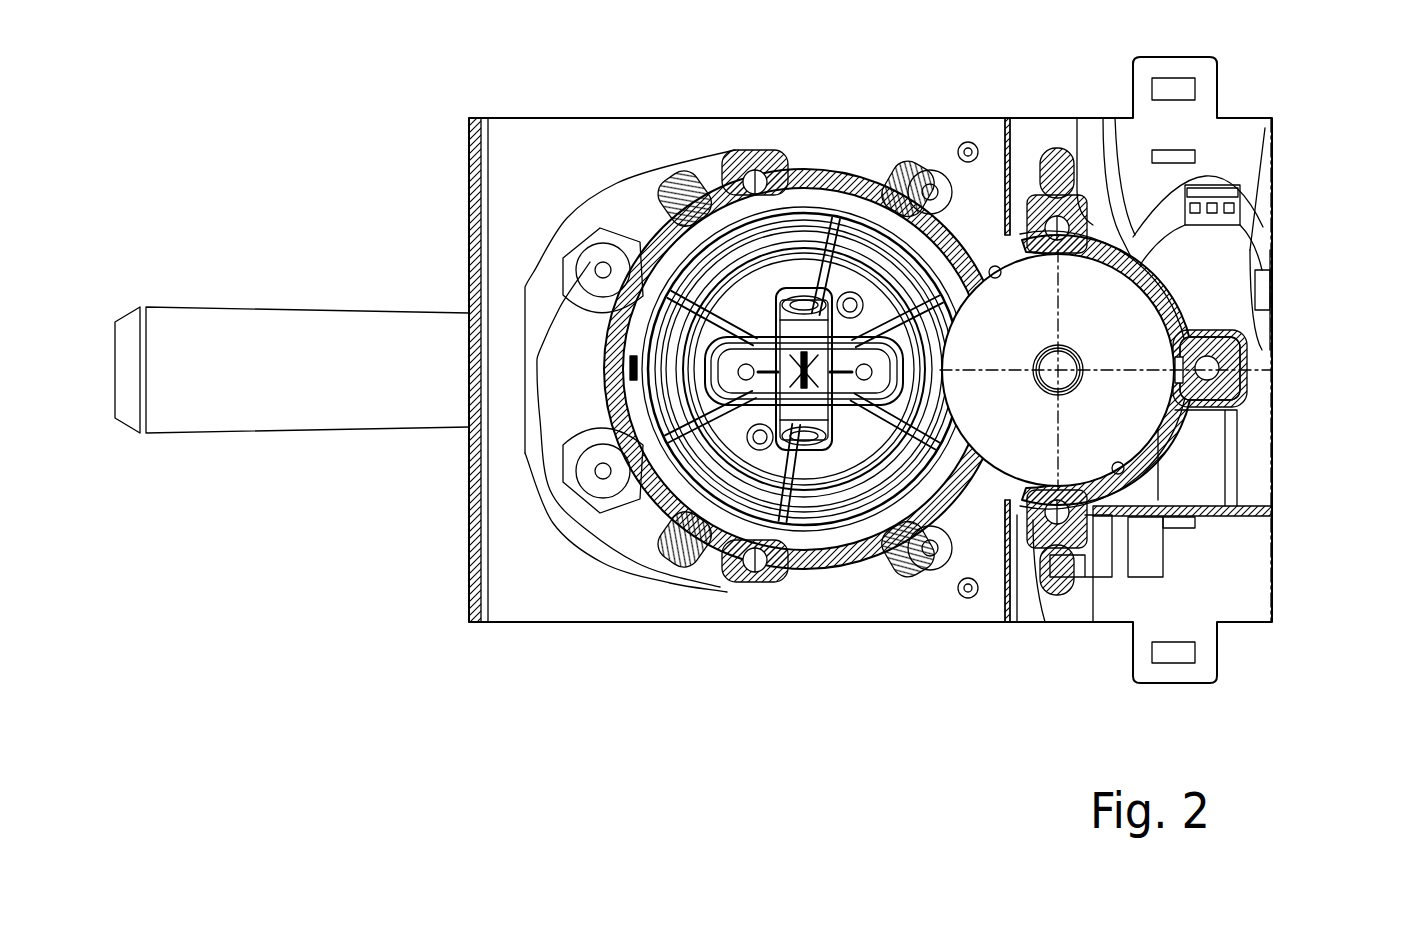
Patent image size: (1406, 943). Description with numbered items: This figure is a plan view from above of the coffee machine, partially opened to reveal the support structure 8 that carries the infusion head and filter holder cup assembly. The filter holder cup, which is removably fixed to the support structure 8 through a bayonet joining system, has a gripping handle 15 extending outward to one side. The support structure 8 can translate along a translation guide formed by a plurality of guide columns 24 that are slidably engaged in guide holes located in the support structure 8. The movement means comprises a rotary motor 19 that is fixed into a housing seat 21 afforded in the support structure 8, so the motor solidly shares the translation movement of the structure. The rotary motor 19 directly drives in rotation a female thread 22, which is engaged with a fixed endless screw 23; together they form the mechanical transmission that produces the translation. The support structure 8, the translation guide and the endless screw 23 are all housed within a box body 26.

The support structure 8 is at (680, 233).
The gripping handle 15 is at (330, 305).
The box body 26 is at (618, 348).
The guide columns 24 is at (752, 172).
The rotary motor 19 is at (1105, 307).
The fixed endless screw 23 is at (1062, 367).
The female thread 22 is at (1087, 366).
The housing seat 21 is at (1175, 425).